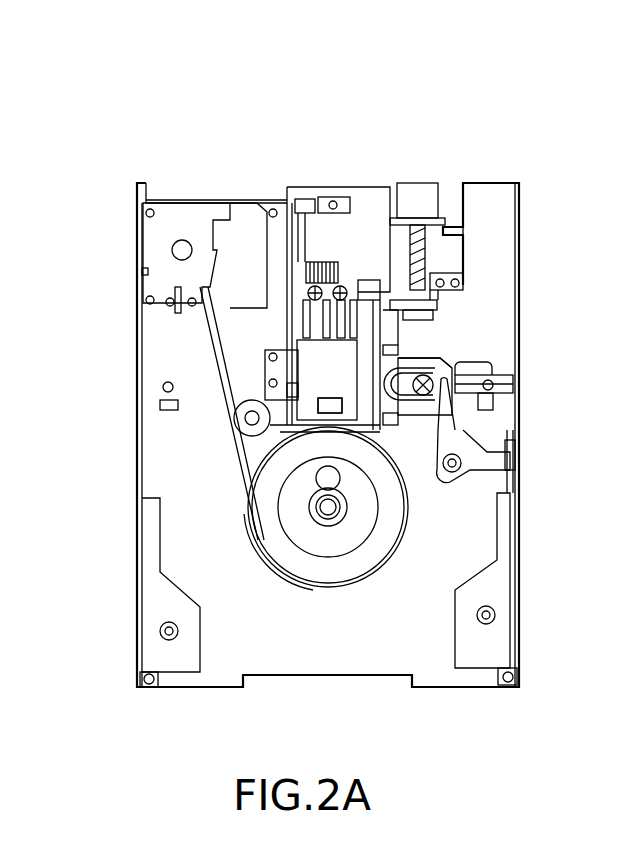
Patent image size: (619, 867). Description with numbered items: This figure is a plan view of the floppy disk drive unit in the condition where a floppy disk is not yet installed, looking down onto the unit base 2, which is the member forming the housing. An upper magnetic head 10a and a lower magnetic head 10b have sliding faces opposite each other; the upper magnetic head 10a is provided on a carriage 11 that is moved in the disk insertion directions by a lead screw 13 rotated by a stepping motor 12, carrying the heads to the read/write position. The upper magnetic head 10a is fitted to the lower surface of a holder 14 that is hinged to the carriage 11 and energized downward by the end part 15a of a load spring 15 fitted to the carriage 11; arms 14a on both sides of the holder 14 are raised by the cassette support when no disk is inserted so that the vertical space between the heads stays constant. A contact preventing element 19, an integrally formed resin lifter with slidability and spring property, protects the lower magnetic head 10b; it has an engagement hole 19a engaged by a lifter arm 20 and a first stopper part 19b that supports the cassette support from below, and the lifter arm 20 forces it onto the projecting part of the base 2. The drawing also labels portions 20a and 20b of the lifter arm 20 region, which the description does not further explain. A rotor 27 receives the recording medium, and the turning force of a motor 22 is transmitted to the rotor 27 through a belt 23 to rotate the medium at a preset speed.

The unit base 2 is at (300, 660).
The upper magnetic head 10a is at (318, 405).
The lower magnetic head 10b is at (330, 405).
The carriage 11 is at (358, 257).
The stepping motor 12 is at (432, 183).
The lead screw 13 is at (463, 262).
The holder 14 is at (265, 318).
The arm 14a is at (385, 333).
The load spring 15 is at (322, 265).
The end part of load spring 15a is at (292, 298).
The contact preventing element 19 is at (390, 425).
The engagement hole 19a is at (452, 358).
The first stopper part 19b is at (383, 310).
The lifter arm 20 is at (453, 440).
The lever end 20a is at (510, 445).
The lever bracket 20b is at (455, 378).
The motor 22 is at (172, 215).
The belt 23 is at (215, 340).
The rotor 27 is at (347, 538).